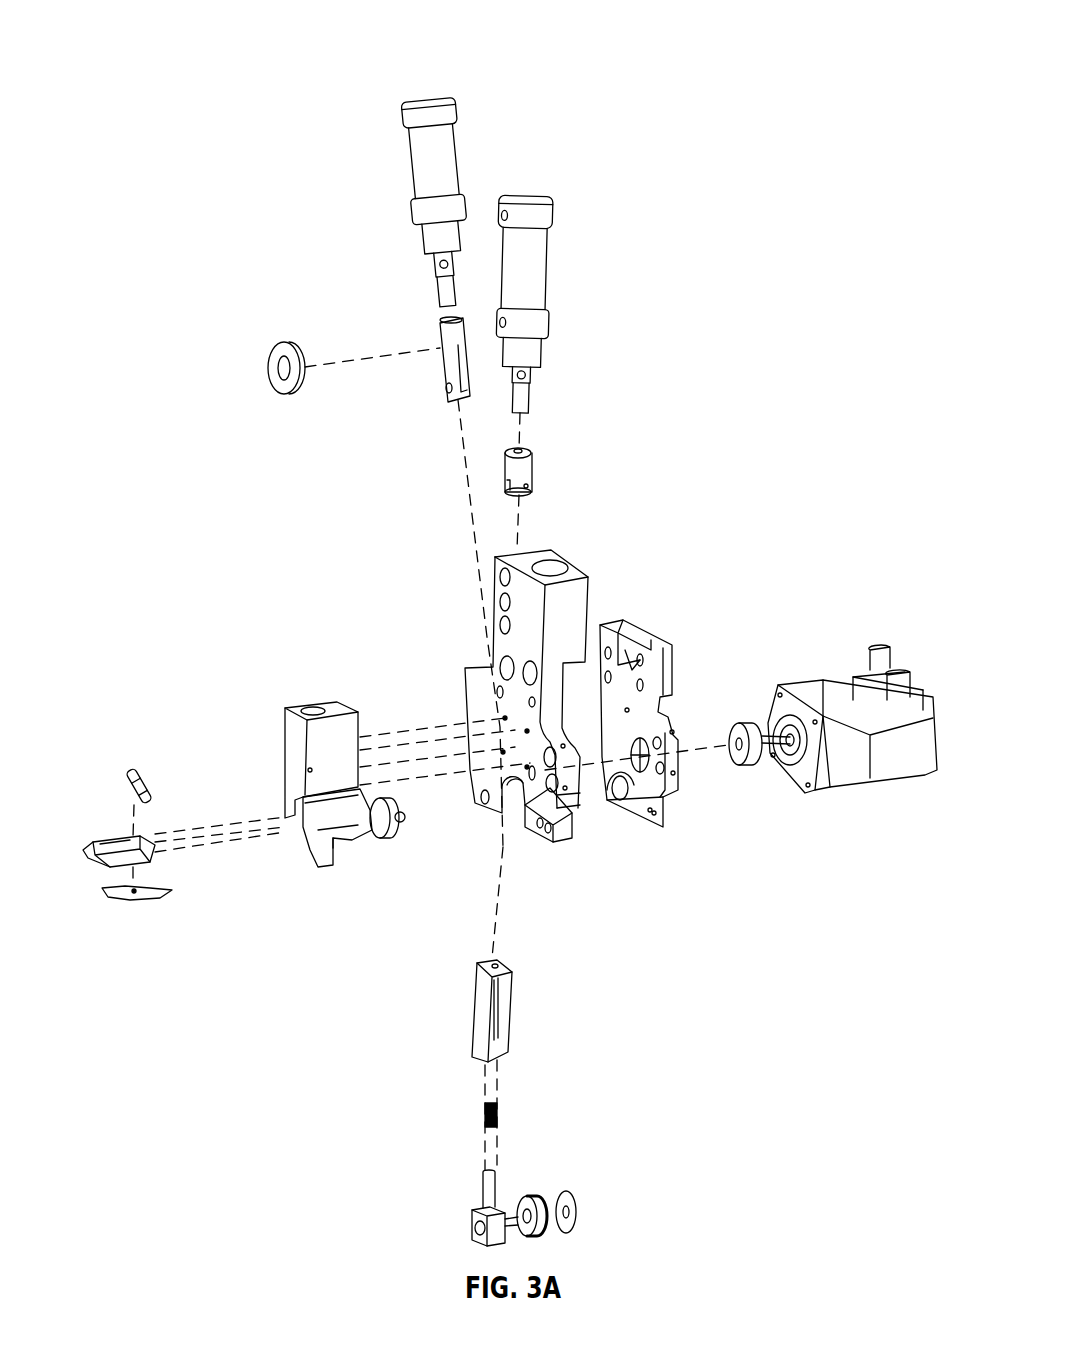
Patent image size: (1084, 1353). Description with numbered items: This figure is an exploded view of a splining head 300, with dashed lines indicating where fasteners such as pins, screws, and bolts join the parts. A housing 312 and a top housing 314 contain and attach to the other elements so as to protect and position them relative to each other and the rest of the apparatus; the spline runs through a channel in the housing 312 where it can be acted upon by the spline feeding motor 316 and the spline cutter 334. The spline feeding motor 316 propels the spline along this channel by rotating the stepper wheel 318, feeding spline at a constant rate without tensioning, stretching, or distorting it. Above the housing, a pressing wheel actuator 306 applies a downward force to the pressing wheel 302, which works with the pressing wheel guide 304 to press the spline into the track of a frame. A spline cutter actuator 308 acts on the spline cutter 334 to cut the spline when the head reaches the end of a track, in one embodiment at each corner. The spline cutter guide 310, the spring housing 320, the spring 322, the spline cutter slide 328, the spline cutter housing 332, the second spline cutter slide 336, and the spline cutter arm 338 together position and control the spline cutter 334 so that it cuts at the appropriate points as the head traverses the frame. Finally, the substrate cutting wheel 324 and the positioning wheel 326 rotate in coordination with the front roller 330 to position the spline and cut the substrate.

The splining head 300 is at (882, 60).
The pressing wheel 302 is at (268, 367).
The pressing wheel guide 304 is at (437, 323).
The pressing wheel actuator 306 is at (415, 157).
The spline cutter actuator 308 is at (543, 270).
The spline cutter guide 310 is at (526, 472).
The housing 312 is at (583, 568).
The top housing 314 is at (683, 650).
The spline feeding motor 316 is at (825, 680).
The stepper wheel 318 is at (741, 768).
The spring housing 320 is at (515, 997).
The spring 322 is at (483, 1112).
The substrate cutting wheel 324 is at (577, 1213).
The positioning wheel 326 is at (540, 1195).
The spline cutter slide 328 is at (470, 1216).
The front roller 330 is at (396, 832).
The spline cutter housing 332 is at (287, 705).
The spline cutter 334 is at (133, 900).
The spline cutter slide 336 is at (100, 843).
The spline cutter arm 338 is at (138, 767).